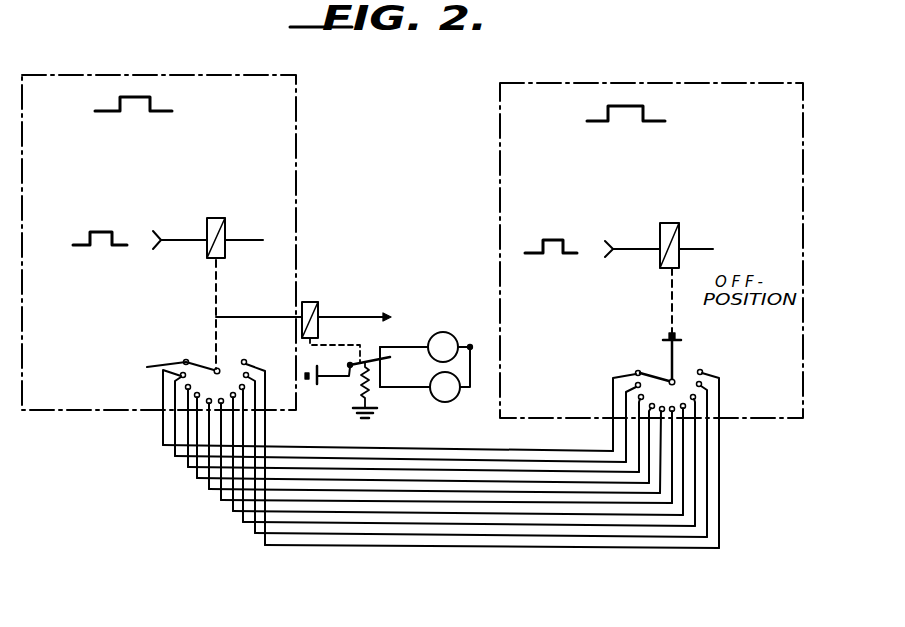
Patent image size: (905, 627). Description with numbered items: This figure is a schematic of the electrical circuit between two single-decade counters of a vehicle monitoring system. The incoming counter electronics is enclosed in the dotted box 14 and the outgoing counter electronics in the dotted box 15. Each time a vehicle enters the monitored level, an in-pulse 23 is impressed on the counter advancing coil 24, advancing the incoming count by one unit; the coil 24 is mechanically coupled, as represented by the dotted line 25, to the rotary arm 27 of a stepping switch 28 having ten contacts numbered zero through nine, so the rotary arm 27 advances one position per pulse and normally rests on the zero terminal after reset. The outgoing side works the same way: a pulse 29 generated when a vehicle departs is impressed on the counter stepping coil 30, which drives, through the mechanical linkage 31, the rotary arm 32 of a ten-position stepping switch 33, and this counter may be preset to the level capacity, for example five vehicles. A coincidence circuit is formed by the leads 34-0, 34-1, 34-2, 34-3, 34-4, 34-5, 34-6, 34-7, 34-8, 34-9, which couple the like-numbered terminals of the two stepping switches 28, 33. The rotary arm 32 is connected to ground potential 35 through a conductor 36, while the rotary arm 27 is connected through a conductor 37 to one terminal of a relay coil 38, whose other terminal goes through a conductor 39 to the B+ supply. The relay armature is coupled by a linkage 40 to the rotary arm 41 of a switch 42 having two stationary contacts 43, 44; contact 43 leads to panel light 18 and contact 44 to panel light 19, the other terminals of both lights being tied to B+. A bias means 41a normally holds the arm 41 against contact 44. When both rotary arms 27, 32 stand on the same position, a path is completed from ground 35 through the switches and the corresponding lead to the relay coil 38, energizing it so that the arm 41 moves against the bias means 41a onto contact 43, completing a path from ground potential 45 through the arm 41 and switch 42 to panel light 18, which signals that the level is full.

The dotted box for incoming counter electronics 14 is at (297, 184).
The dotted box for outgoing counter electronics 15 is at (500, 158).
The panel light 18 is at (452, 333).
The panel light 19 is at (443, 402).
The in-pulse 23 is at (100, 109).
The counter advancing coil 24 is at (235, 199).
The mechanical coupling 25 is at (212, 280).
The rotary arm 27 is at (198, 365).
The stepping switch 28 is at (163, 376).
The pulse 29 is at (645, 110).
The counter stepping coil 30 is at (688, 205).
The mechanical linkage 31 is at (667, 292).
The rotary arm 32 is at (662, 377).
The ten-position stepping switch 33 is at (722, 379).
The lead 34-0 is at (367, 448).
The lead 34-1 is at (408, 459).
The lead 34-2 is at (457, 472).
The lead 34-3 is at (510, 483).
The lead 34-4 is at (542, 493).
The lead 34-5 is at (596, 504).
The lead 34-6 is at (640, 517).
The lead 34-7 is at (696, 518).
The lead 34-8 is at (708, 497).
The lead 34-9 is at (720, 462).
The ground potential 35 is at (684, 339).
The conductor 36 is at (675, 361).
The conductor 37 is at (263, 301).
The relay coil 38 is at (308, 302).
The conductor 39 is at (338, 316).
The linkage 40 is at (333, 345).
The rotary arm 41 is at (357, 371).
The bias means 41a is at (355, 395).
The switch 42 is at (373, 348).
The stationary contact 43 is at (402, 349).
The stationary contact 44 is at (401, 389).
The ground potential 45 is at (316, 385).